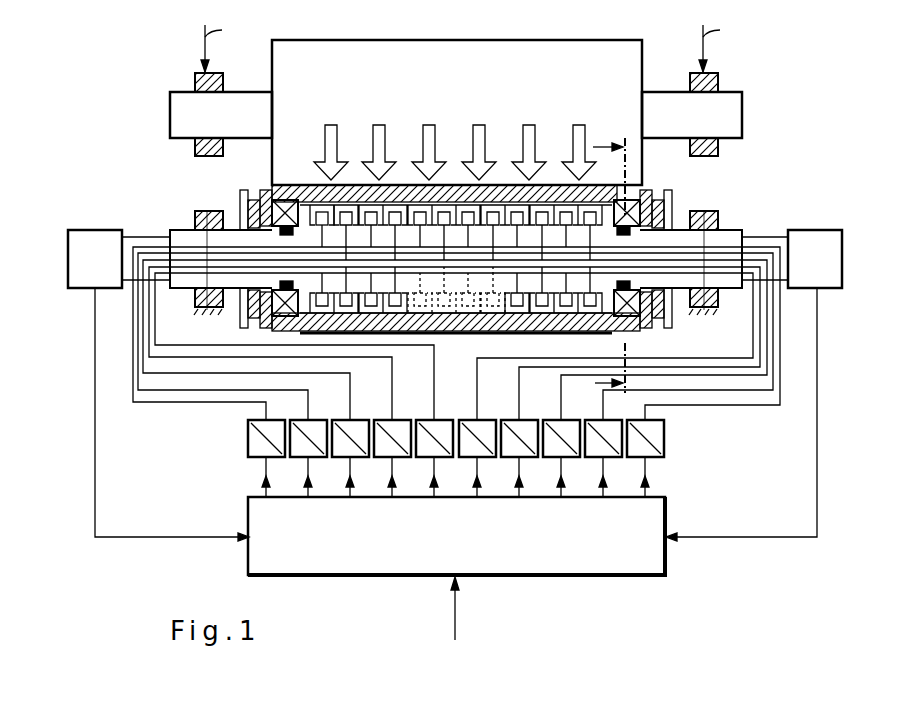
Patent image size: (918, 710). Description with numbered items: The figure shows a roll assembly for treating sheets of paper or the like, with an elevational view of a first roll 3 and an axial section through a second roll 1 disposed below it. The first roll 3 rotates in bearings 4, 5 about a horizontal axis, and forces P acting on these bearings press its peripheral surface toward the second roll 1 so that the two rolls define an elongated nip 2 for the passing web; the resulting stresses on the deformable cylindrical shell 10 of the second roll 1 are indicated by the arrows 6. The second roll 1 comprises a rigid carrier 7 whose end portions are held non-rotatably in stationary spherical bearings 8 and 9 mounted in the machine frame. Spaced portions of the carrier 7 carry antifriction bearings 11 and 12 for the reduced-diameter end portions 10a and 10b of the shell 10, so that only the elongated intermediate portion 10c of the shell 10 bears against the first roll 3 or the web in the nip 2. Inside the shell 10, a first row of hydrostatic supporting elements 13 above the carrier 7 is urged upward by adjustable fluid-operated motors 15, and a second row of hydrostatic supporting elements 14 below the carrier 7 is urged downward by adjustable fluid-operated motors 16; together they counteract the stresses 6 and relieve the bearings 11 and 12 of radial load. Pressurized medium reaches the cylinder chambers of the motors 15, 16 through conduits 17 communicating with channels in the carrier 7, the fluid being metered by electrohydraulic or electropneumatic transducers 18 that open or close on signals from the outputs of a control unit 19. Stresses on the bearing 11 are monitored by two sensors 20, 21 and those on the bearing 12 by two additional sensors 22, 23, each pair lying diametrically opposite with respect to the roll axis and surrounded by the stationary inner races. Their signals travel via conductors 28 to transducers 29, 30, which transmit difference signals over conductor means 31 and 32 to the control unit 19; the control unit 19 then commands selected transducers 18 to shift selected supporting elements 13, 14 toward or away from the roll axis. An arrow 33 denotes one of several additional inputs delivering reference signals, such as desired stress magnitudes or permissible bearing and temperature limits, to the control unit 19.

The second roll 1 is at (466, 262).
The nip 2 is at (459, 186).
The first roll 3 is at (517, 60).
The bearing 4 is at (195, 82).
The bearing 5 is at (720, 82).
The stresses 6 is at (383, 139).
The rigid carrier 7 is at (732, 236).
The spherical bearing 8 is at (195, 297).
The spherical bearing 9 is at (719, 265).
The cylindrical shell 10 is at (454, 219).
The end portion of the shell 10a is at (292, 186).
The end portion of the shell 10b is at (635, 334).
The intermediate portion of the shell 10c is at (512, 186).
The bearing 11 is at (268, 197).
The bearing 12 is at (641, 198).
The hydrostatic supporting element 13 is at (322, 208).
The hydrostatic supporting element 14 is at (310, 331).
The adjustable fluid-operated motor 15 is at (372, 208).
The adjustable fluid-operated motor 16 is at (342, 318).
The conduits 17 is at (155, 382).
The electrohydraulic or electropneumatic transducer 18 is at (256, 447).
The control unit 19 is at (450, 558).
The sensor 20 is at (238, 203).
The sensor 21 is at (255, 310).
The sensor 22 is at (672, 222).
The sensor 23 is at (660, 318).
The conductors 28 is at (130, 233).
The transducer 29 is at (80, 286).
The transducer 30 is at (825, 240).
The conductor means 31 is at (219, 538).
The conductor means 32 is at (695, 538).
The additional input 33 is at (455, 620).